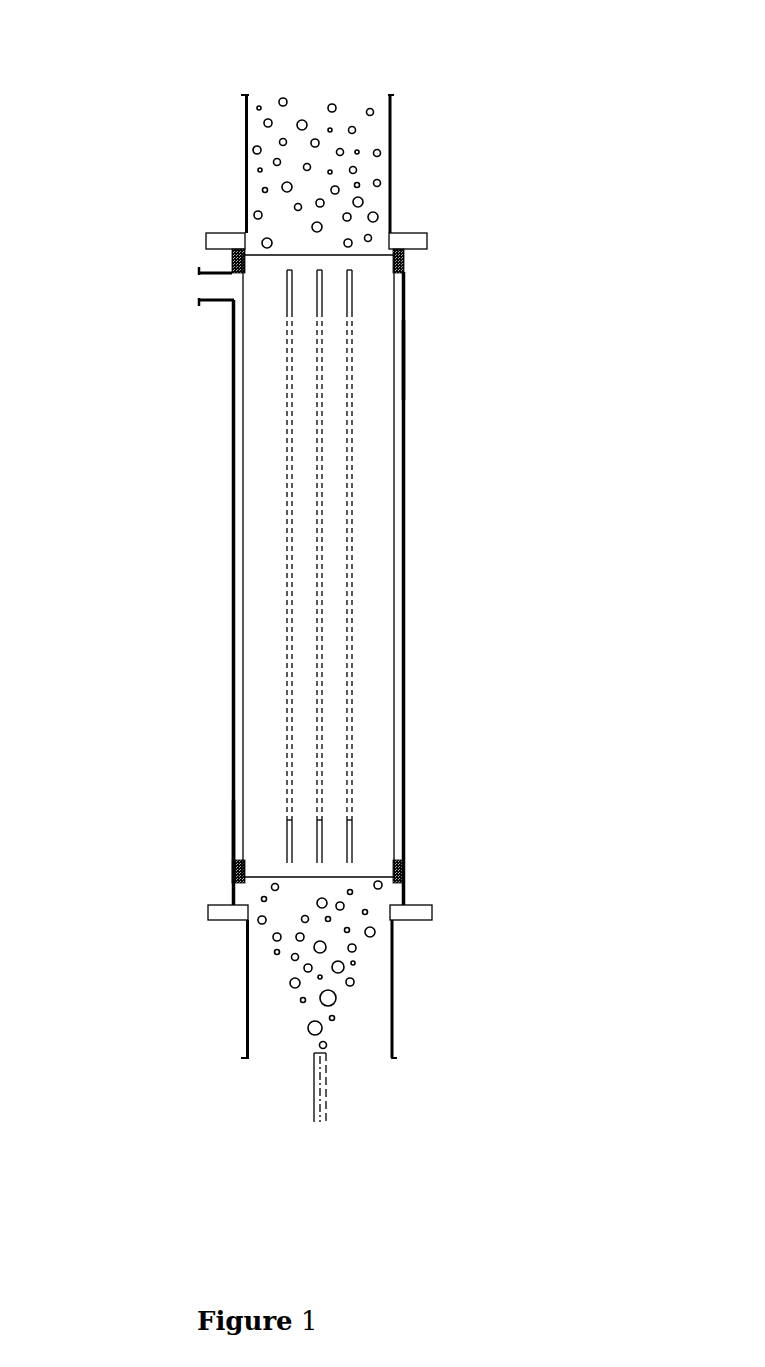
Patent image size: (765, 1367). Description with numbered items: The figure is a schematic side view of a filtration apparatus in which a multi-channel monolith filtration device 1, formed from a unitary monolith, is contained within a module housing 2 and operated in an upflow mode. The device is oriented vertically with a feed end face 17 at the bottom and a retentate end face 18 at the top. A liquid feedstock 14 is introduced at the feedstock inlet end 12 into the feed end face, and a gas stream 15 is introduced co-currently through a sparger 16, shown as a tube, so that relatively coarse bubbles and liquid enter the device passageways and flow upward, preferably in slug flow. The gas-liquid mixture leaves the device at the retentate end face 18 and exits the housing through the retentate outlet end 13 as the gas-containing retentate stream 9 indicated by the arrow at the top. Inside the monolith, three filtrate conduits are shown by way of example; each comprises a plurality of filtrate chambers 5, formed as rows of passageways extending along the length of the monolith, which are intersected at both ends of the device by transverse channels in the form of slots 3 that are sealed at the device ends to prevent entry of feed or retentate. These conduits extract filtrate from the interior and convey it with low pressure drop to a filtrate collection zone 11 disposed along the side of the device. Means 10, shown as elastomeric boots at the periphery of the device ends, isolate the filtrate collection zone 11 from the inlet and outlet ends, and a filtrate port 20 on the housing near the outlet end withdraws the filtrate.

The multi-channel monolith filtration device 1 is at (444, 538).
The module housing 2 is at (384, 580).
The slots 3 is at (271, 567).
The filtrate chambers 5 is at (245, 566).
The product outlet stream 9 is at (323, 39).
The means for isolating a filtrate collection zone 10 is at (384, 589).
The filtrate collection zone 11 is at (320, 590).
The feedstock inlet end 12 is at (469, 1092).
The retentate outlet end 13 is at (454, 42).
The liquid feedstock 14 is at (362, 1125).
The gas stream 15 is at (256, 759).
The sparger 16 is at (275, 1090).
The feed end face 17 is at (345, 968).
The retentate end face 18 is at (341, 174).
The filtrate port 20 is at (162, 286).